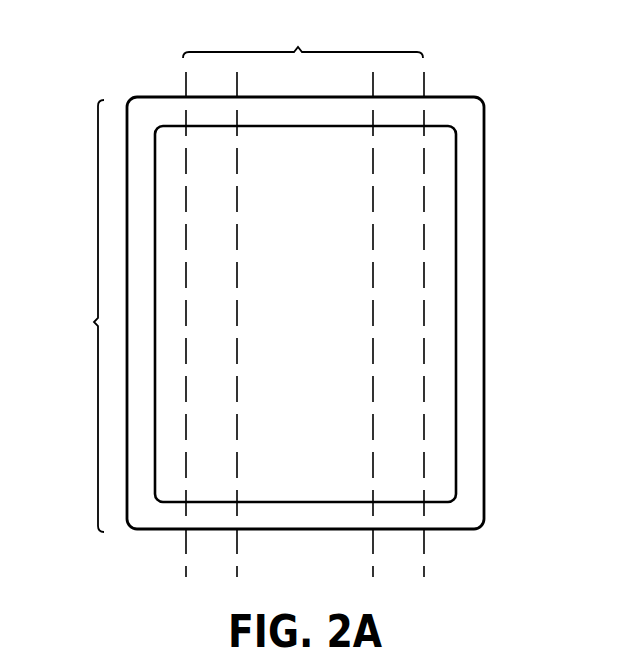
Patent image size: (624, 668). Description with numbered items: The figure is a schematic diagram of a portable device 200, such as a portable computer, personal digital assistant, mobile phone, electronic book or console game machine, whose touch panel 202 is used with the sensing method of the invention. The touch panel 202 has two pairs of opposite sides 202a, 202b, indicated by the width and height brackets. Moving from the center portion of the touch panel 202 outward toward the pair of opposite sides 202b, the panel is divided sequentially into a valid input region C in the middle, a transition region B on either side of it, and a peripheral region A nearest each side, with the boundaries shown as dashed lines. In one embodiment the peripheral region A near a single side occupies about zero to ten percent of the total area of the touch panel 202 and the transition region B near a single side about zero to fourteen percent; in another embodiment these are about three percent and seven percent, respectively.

The portable device 200 is at (494, 92).
The touch panel 202 is at (457, 222).
The pair of opposite sides 202a is at (303, 38).
The pair of opposite sides 202b is at (75, 316).
The peripheral region A is at (169, 468).
The transition region B is at (209, 468).
The valid input region C is at (310, 449).